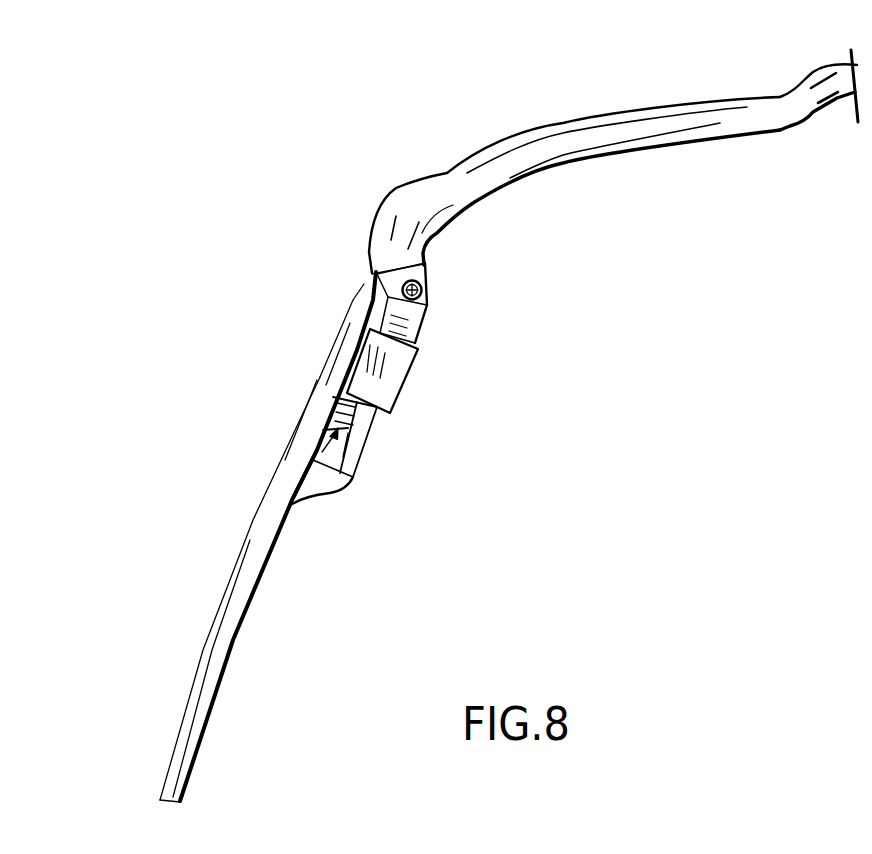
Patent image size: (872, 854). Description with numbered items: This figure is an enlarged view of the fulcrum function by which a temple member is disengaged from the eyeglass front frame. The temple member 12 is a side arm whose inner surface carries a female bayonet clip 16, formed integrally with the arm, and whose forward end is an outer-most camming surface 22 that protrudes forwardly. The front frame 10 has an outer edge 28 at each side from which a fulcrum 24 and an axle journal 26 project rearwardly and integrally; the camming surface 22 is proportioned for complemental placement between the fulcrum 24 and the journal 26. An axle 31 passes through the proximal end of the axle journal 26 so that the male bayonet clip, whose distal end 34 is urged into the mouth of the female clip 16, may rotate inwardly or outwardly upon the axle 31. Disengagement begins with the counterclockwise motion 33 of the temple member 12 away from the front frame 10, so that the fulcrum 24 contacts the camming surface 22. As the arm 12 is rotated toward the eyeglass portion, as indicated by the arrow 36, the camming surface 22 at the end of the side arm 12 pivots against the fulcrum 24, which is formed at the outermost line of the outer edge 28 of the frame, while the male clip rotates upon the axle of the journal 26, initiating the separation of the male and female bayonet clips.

The front frame 10 is at (614, 130).
The temple member 12 is at (227, 667).
The female bayonet clip 16 is at (380, 387).
The camming surface 22 is at (367, 283).
The fulcrum 24 is at (372, 273).
The axle journal 26 is at (427, 275).
The outer edge 28 is at (473, 206).
The axle 31 is at (433, 296).
The counterclockwise motion 33 is at (177, 688).
The distal end 34 is at (813, 77).
The arrow 36 is at (397, 188).